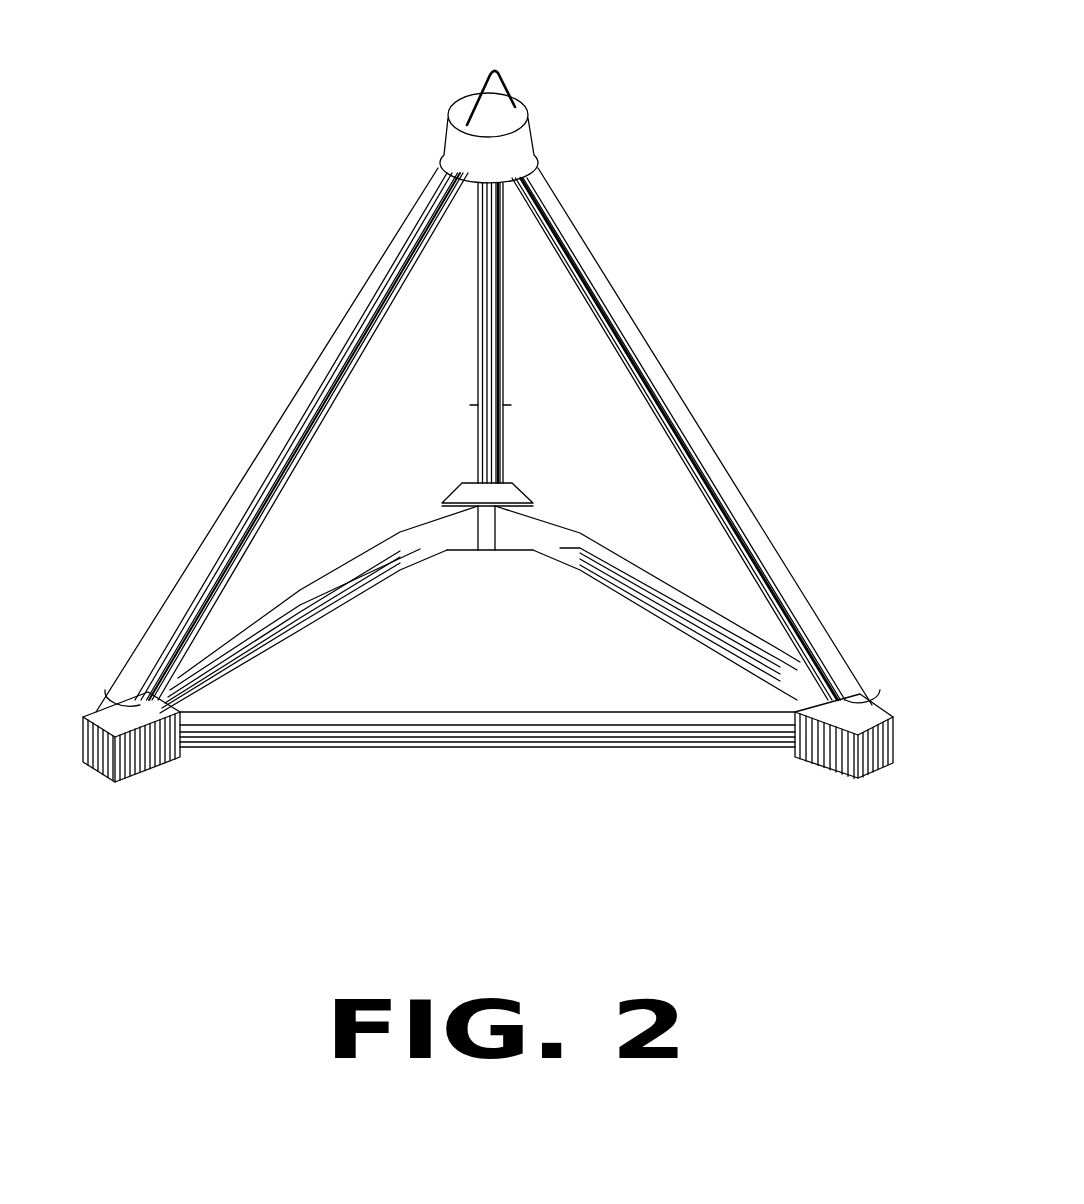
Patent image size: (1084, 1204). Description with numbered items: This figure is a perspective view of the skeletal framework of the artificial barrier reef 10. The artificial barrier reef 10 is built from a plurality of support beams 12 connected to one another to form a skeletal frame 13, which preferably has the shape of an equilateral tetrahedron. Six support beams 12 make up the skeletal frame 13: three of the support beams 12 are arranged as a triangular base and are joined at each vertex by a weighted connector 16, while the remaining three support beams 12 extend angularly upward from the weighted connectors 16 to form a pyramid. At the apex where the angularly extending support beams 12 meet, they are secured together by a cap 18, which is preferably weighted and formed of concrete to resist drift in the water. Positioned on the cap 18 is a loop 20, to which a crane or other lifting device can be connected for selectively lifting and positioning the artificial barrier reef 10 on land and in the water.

The artificial barrier reef 10 is at (753, 163).
The support beam 12 is at (347, 557).
The skeletal frame 13 is at (663, 748).
The weighted connector 16 is at (104, 686).
The cap 18 is at (450, 102).
The loop 20 is at (500, 66).